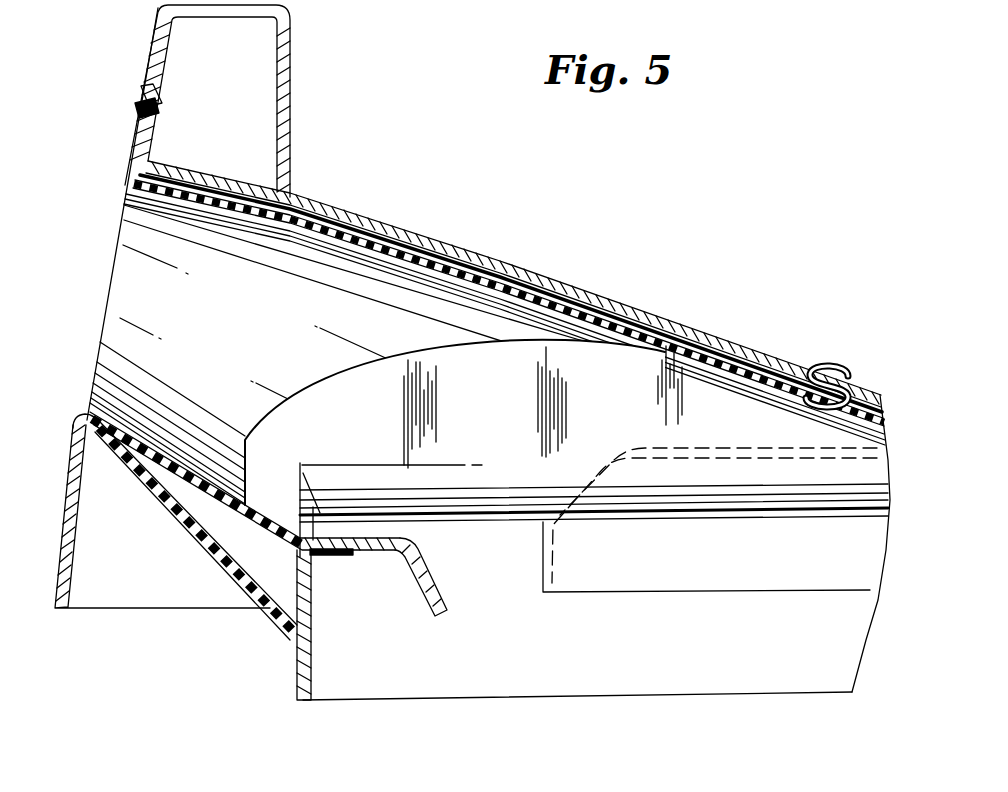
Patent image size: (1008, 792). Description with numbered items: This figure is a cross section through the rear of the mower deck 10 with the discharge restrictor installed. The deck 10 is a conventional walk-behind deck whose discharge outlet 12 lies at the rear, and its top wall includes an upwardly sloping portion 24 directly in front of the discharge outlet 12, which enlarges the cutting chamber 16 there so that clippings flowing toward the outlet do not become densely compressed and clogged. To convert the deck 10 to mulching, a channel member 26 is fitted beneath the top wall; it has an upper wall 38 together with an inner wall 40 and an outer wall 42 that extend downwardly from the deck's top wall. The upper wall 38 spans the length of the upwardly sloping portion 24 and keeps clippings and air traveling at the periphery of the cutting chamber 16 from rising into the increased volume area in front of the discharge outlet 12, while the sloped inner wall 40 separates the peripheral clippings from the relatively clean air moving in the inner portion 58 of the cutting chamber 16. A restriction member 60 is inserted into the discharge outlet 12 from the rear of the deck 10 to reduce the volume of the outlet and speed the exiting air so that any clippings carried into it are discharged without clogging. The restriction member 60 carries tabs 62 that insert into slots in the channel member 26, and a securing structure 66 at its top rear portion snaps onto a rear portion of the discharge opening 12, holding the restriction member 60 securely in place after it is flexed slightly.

The mower deck 10 is at (559, 268).
The discharge outlet 12 is at (152, 282).
The cutting chamber 16 is at (724, 675).
The upwardly sloping portion 24 is at (672, 318).
The channel member 26 is at (442, 587).
The upper wall 38 is at (378, 550).
The inner wall 40 is at (430, 600).
The outer wall 42 is at (318, 596).
The inner portion 58 is at (514, 557).
The restriction member 60 is at (150, 186).
The tabs 62 is at (332, 556).
The securing structure 66 is at (140, 106).